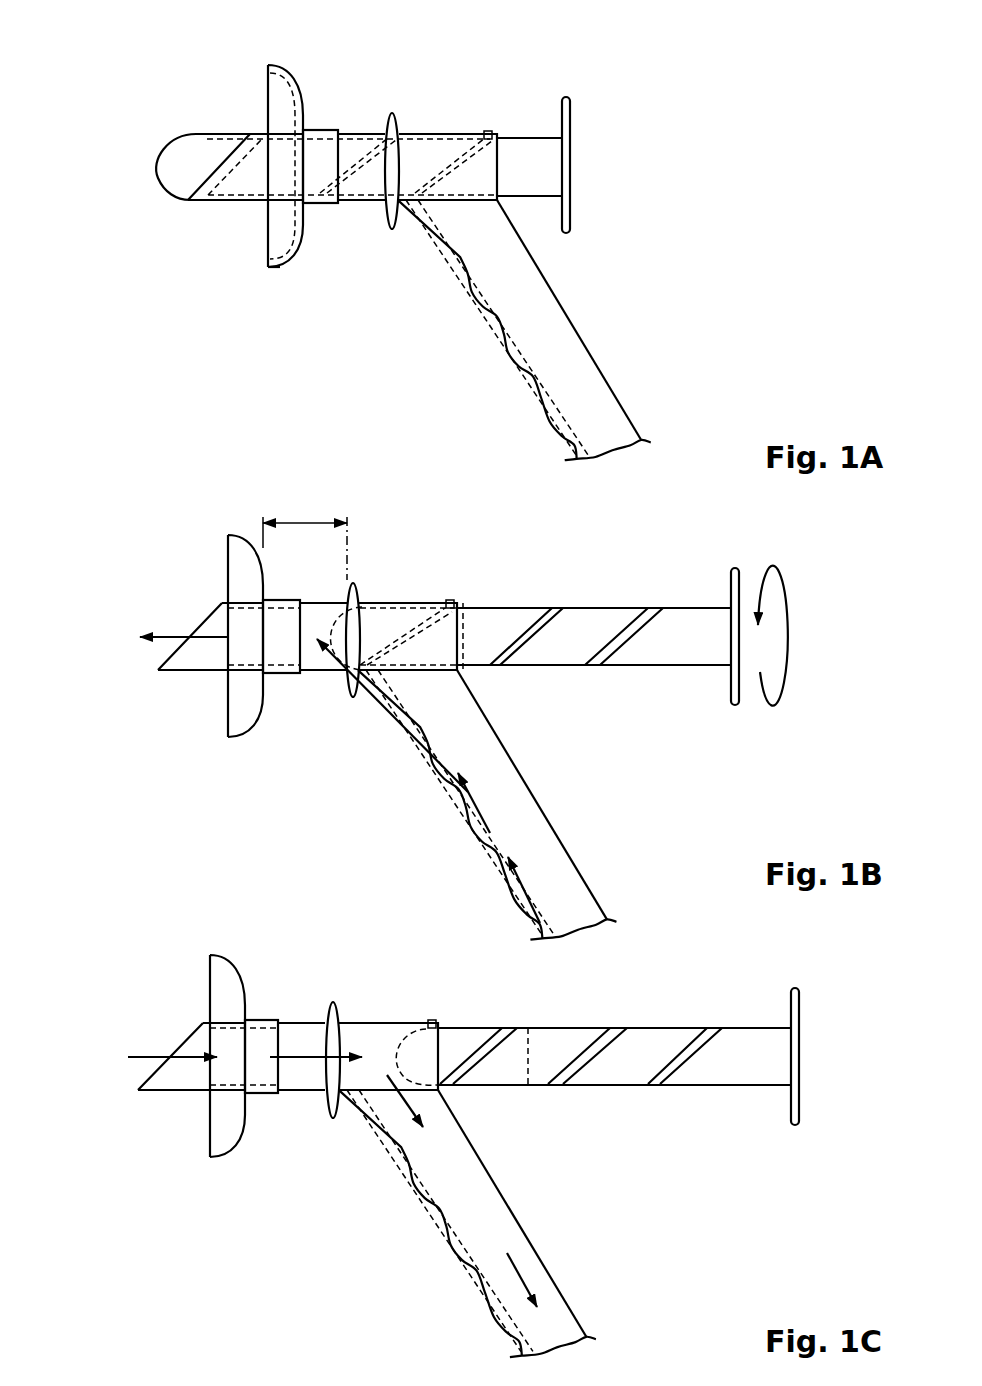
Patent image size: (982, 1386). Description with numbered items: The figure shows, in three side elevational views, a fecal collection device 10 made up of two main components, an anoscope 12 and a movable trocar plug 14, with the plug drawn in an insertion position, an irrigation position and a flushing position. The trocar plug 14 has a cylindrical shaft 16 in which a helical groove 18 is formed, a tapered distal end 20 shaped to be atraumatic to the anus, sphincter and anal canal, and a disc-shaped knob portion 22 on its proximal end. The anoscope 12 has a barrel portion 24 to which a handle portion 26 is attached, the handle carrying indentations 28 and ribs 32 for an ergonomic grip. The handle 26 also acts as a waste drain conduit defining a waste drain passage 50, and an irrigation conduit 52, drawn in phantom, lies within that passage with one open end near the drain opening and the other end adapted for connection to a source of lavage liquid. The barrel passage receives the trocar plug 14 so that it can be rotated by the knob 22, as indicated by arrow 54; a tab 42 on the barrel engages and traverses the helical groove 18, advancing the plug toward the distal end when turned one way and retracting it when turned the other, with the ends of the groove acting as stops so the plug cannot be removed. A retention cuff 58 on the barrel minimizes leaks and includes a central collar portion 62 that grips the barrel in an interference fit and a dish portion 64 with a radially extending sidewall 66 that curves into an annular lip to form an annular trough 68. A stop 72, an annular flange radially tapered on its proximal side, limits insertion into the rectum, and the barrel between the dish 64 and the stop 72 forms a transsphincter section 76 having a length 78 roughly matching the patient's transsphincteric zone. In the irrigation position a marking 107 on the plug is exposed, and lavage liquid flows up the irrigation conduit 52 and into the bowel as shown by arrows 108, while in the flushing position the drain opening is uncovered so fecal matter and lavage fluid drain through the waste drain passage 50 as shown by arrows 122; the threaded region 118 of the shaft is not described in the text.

In FIG. 1A, the fecal collection device 10 is at (124, 56).
In FIG. 1B, the fecal collection device 10 is at (146, 452).
In FIG. 1C, the fecal collection device 10 is at (218, 912).
In FIG. 1A, the anoscope 12 is at (220, 207).
In FIG. 1B, the anoscope 12 is at (200, 698).
In FIG. 1C, the anoscope 12 is at (197, 1103).
In FIG. 1A, the trocar plug 14 is at (590, 172).
In FIG. 1B, the trocar plug 14 is at (613, 594).
In FIG. 1C, the trocar plug 14 is at (660, 1012).
In FIG. 1A, the cylindrical shaft 16 is at (528, 137).
In FIG. 1B, the cylindrical shaft 16 is at (675, 667).
In FIG. 1B, the helical groove 18 is at (555, 607).
In FIG. 1A, the tapered distal end 20 is at (157, 163).
In FIG. 1A, the disc-shaped knob portion 22 is at (566, 97).
In FIG. 1B, the disc-shaped knob portion 22 is at (735, 568).
In FIG. 1A, the barrel portion 24 is at (436, 133).
In FIG. 1A, the handle portion 26 is at (560, 300).
In FIG. 1A, the indentations 28 is at (506, 333).
In FIG. 1A, the ribs 32 is at (517, 377).
In FIG. 1A, the tab 42 is at (489, 131).
In FIG. 1B, the tab 42 is at (450, 600).
In FIG. 1C, the tab 42 is at (432, 1022).
In FIG. 1A, the waste drain passage 50 is at (563, 355).
In FIG. 1B, the waste drain passage 50 is at (496, 758).
In FIG. 1C, the waste drain passage 50 is at (503, 1223).
In FIG. 1A, the irrigation conduit 52 is at (477, 298).
In FIG. 1B, the irrigation conduit 52 is at (433, 757).
In FIG. 1B, the arrow 54 is at (791, 642).
In FIG. 1A, the retention cuff 58 is at (247, 107).
In FIG. 1A, the central collar portion 62 is at (315, 130).
In FIG. 1A, the dish portion 64 is at (306, 56).
In FIG. 1B, the dish portion 64 is at (240, 737).
In FIG. 1A, the radially extending sidewall 66 is at (282, 268).
In FIG. 1A, the annular trough 68 is at (276, 236).
In FIG. 1A, the stop 72 is at (395, 113).
In FIG. 1B, the stop 72 is at (354, 697).
In FIG. 1A, the transsphincter section 76 is at (360, 202).
In FIG. 1B, the transsphincter section 76 is at (313, 672).
In FIG. 1B, the length 78 is at (307, 522).
In FIG. 1B, the marking 107 is at (472, 628).
In FIG. 1C, the marking 107 is at (535, 1052).
In FIG. 1B, the arrows 108 is at (480, 810).
In FIG. 1C, the threaded section 118 is at (673, 1065).
In FIG. 1C, the arrows 122 is at (407, 1103).